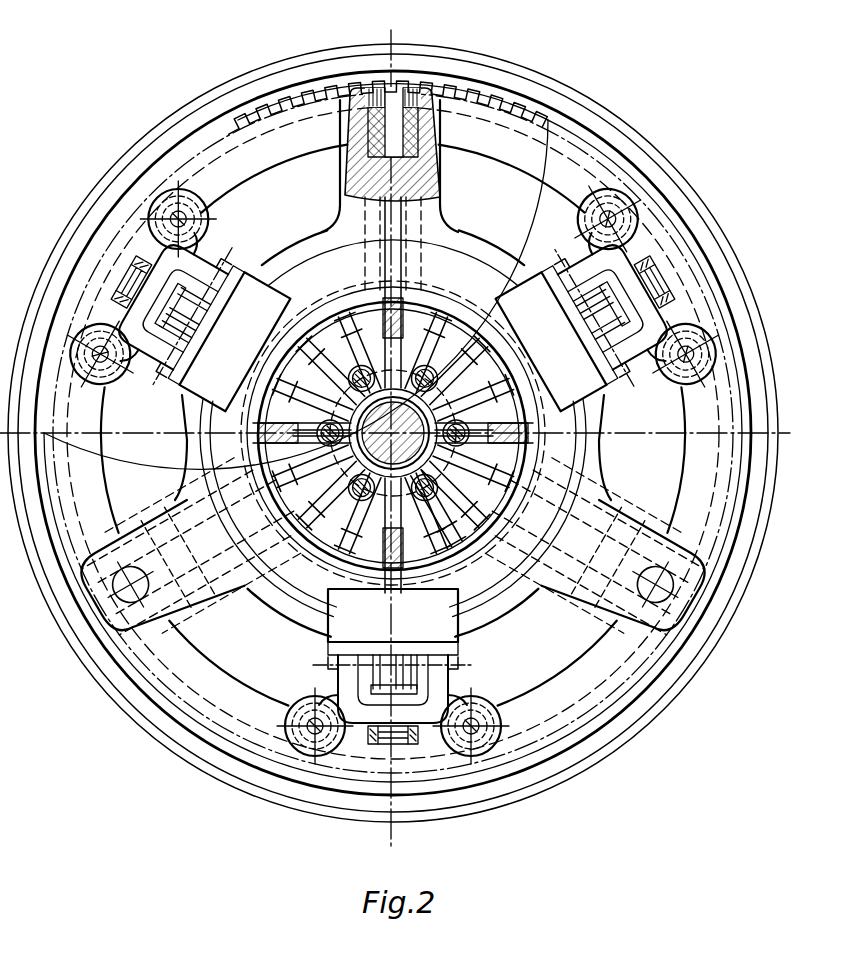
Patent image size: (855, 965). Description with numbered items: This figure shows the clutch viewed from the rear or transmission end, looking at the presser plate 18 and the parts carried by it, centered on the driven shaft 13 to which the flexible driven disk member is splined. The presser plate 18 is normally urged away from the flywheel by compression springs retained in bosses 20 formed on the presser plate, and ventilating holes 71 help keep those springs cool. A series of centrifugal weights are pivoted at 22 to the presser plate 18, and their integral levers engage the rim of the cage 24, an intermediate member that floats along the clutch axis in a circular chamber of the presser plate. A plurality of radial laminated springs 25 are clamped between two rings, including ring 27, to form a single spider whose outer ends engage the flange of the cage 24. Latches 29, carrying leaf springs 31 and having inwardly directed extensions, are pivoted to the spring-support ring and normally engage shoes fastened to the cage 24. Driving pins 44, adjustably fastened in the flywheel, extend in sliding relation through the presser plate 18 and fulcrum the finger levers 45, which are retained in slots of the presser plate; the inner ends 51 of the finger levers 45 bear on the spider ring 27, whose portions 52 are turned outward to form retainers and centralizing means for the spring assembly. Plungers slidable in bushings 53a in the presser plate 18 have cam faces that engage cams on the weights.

The driven shaft 13 is at (547, 617).
The presser plate 18 is at (393, 403).
The bosses 20 is at (153, 178).
The pivot 22 is at (177, 234).
The cage 24 is at (544, 142).
The radial laminated springs 25 is at (393, 298).
The ring 27 is at (416, 420).
The latches 29 is at (223, 591).
The leaf springs 31 is at (302, 582).
The pins 44 is at (409, 104).
The finger levers 45 is at (393, 317).
The inner ends 51 is at (484, 214).
The portions 52 is at (375, 148).
The bushings 53a is at (441, 789).
The ventilating holes 71 is at (124, 187).